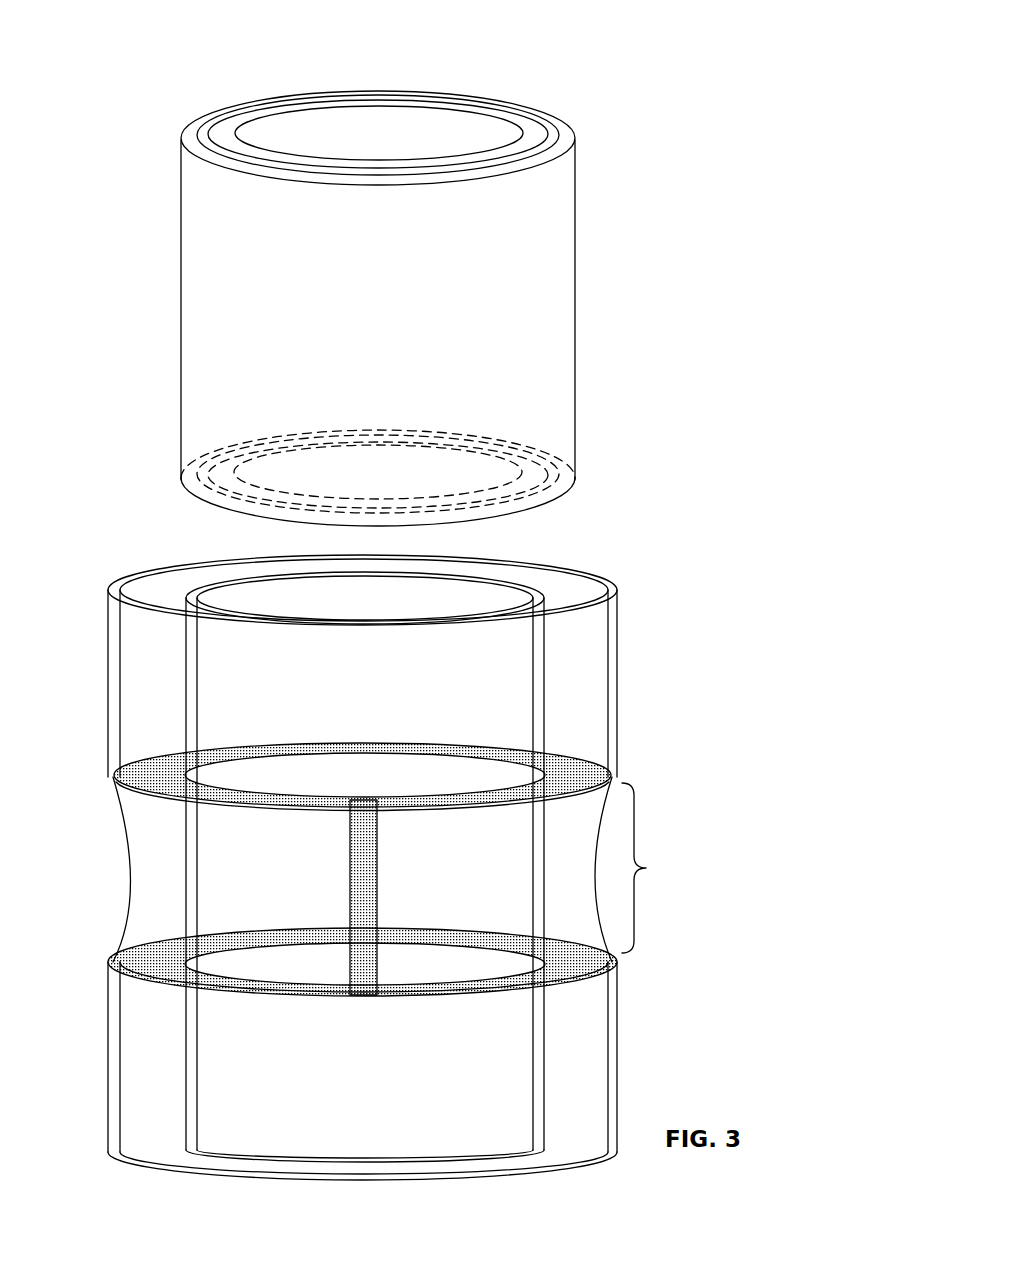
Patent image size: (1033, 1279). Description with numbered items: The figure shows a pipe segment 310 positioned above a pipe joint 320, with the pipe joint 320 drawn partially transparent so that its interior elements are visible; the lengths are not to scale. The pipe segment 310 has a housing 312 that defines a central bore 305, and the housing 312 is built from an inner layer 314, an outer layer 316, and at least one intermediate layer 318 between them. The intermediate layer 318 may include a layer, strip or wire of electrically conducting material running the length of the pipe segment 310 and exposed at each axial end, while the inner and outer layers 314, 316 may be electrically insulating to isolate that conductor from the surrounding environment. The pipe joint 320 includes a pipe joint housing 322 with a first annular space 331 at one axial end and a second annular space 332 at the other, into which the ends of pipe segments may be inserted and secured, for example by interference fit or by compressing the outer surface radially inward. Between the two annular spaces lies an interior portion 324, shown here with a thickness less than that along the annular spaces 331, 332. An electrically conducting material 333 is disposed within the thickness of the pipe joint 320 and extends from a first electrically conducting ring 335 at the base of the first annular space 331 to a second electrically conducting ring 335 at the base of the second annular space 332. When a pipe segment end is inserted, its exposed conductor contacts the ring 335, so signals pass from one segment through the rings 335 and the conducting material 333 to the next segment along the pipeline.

The central bore 305 is at (360, 141).
The pipe segment 310 is at (602, 110).
The housing 312 is at (190, 280).
The inner layer 314 is at (230, 128).
The outer layer 316 is at (193, 123).
The intermediate layer 318 is at (213, 122).
The pipe joint 320 is at (685, 602).
The pipe joint housing 322 is at (136, 912).
The interior portion 324 is at (666, 868).
The first annular space 331 is at (153, 598).
The second annular space 332 is at (149, 1138).
The electrically conducting material 333 is at (352, 856).
The electrically conducting ring 335 is at (148, 768).